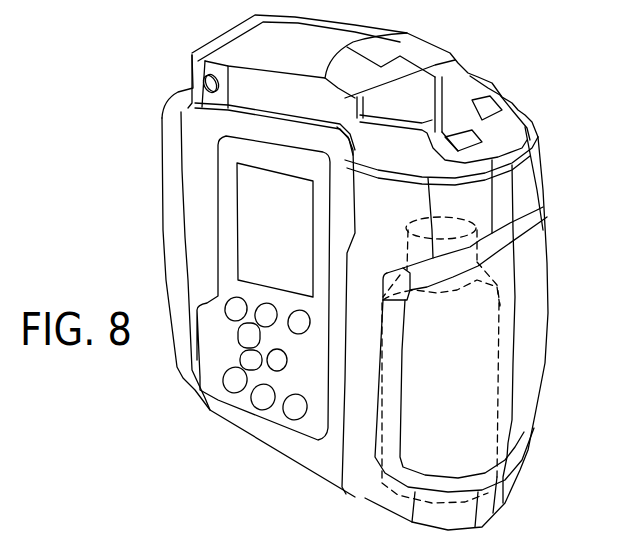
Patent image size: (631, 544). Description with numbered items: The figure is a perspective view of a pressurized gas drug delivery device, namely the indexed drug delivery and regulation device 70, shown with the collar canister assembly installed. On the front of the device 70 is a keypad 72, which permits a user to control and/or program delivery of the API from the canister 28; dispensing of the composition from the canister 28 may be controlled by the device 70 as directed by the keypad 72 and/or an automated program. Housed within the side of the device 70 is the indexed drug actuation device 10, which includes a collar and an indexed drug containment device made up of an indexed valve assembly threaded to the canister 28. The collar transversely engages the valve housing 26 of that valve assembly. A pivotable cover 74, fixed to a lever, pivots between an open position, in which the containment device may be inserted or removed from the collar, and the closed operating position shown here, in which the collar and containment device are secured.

The indexed drug delivery and regulation device 70 is at (130, 54).
The keypad 72 is at (222, 353).
The pivotable cover 74 is at (537, 330).
The valve housing 26 is at (517, 253).
The canister 28 is at (488, 433).
The indexed drug actuation device 10 is at (461, 320).